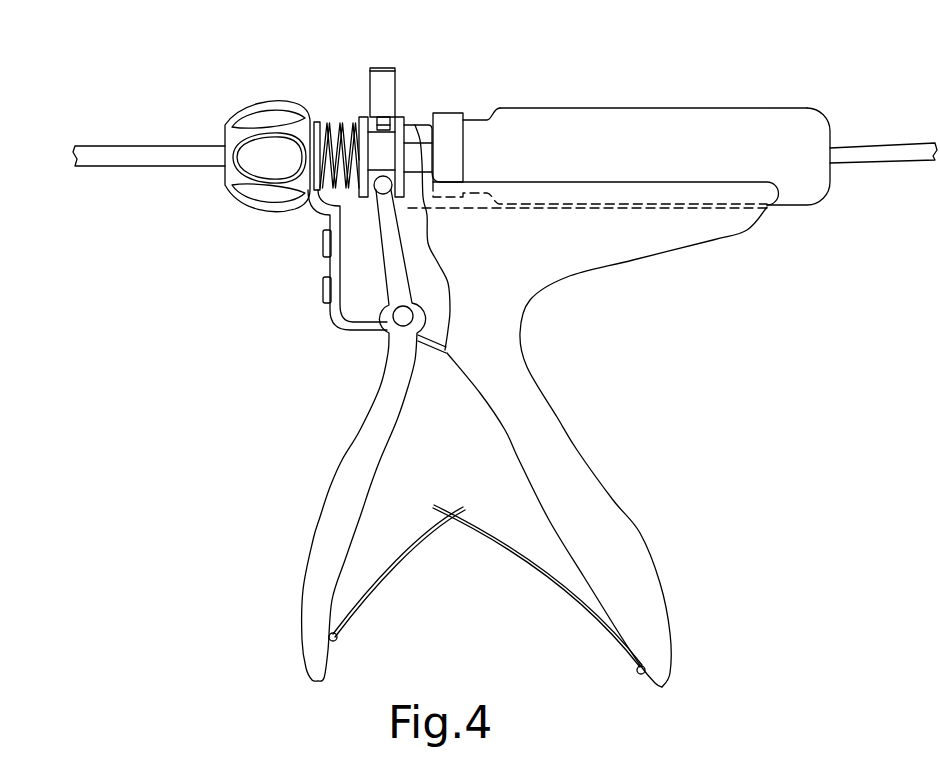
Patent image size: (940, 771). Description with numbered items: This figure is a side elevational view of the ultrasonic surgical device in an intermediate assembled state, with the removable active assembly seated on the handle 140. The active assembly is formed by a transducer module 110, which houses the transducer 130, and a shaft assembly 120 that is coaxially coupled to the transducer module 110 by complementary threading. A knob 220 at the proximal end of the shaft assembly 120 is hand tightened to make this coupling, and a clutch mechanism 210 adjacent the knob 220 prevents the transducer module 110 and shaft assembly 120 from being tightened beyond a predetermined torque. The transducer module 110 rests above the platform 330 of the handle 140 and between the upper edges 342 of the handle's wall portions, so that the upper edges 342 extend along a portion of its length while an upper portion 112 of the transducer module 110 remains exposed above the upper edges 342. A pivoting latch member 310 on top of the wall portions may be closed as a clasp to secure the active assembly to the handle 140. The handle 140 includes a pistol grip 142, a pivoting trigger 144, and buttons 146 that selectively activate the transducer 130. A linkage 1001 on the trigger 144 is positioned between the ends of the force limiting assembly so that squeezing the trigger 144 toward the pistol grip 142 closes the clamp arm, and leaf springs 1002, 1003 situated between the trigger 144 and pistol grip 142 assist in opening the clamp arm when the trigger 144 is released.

The transducer module 110 is at (633, 108).
The upper portion 112 is at (712, 140).
The shaft assembly 120 is at (151, 143).
The transducer 130 is at (773, 122).
The handle 140 is at (667, 523).
The pistol grip 142 is at (665, 617).
The pivoting trigger 144 is at (307, 600).
The buttons 146 is at (322, 292).
The clutch mechanism 210 is at (403, 102).
The knob 220 is at (272, 110).
The latch member 310 is at (359, 98).
The platform 330 is at (697, 207).
The upper edges 342 is at (563, 180).
The linkage 1001 is at (393, 201).
The leaf spring 1002 is at (398, 547).
The leaf spring 1003 is at (543, 573).